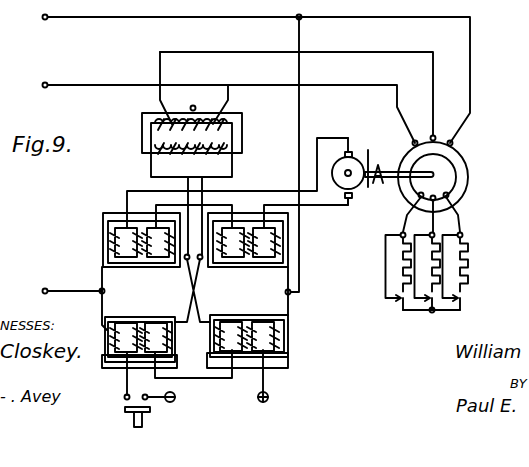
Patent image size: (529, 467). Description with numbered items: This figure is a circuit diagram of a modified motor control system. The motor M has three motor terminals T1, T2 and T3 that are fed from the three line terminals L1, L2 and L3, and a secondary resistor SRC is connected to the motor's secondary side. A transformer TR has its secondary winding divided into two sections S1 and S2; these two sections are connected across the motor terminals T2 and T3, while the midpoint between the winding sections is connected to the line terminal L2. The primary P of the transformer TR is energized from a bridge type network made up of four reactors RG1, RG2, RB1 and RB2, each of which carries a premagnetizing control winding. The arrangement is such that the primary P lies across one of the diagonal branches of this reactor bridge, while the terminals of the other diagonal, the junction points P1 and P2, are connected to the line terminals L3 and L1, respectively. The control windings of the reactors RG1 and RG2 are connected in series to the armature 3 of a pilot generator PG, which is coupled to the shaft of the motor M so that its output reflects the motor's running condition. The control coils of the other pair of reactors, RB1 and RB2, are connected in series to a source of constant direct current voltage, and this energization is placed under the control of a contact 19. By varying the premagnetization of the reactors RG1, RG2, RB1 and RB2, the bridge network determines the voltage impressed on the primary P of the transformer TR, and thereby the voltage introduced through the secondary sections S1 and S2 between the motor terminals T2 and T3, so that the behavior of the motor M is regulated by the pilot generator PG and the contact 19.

The line terminal L1 is at (40, 19).
The line terminal L2 is at (40, 87).
The line terminal L3 is at (40, 292).
The secondary winding section S1 is at (176, 106).
The secondary winding section S2 is at (215, 100).
The transformer TR is at (273, 143).
The primary P is at (190, 150).
The motor terminal T1 is at (453, 143).
The motor terminal T2 is at (435, 137).
The motor terminal T3 is at (410, 143).
The motor M is at (470, 158).
The pilot generator PG is at (354, 229).
The armature 3 is at (358, 180).
The secondary resistor SRC is at (465, 261).
The reactor RG1 is at (112, 268).
The reactor RG2 is at (232, 268).
The reactor RB1 is at (140, 316).
The reactor RB2 is at (250, 306).
The junction point P1 is at (99, 294).
The junction point P2 is at (292, 294).
The contact 19 is at (136, 403).